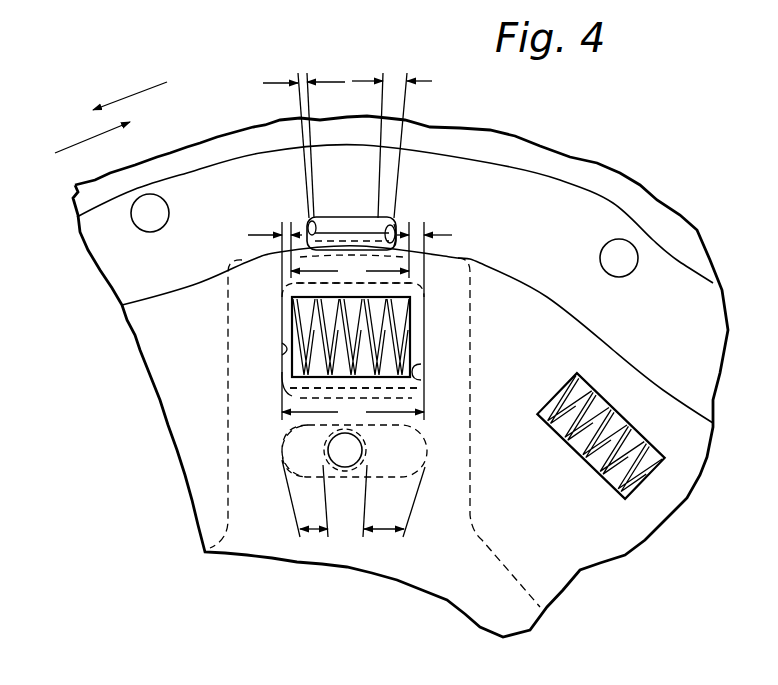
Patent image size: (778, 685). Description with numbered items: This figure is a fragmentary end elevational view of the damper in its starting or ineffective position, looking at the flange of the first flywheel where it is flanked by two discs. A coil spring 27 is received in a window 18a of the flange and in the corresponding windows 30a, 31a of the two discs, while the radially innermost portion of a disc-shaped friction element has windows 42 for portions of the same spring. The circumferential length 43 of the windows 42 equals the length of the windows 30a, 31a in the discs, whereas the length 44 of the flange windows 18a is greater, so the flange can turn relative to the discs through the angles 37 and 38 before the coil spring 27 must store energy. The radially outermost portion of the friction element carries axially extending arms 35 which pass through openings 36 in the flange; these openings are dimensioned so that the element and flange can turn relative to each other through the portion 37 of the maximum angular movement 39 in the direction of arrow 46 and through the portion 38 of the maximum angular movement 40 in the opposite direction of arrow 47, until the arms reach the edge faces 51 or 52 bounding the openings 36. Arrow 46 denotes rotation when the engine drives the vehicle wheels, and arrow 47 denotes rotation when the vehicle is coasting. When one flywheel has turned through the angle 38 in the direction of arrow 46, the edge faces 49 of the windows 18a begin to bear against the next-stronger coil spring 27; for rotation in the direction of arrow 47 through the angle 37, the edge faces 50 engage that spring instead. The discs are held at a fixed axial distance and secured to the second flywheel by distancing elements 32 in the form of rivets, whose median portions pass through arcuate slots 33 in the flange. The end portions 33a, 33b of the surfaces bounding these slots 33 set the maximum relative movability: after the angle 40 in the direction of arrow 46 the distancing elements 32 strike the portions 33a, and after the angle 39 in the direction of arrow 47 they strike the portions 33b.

The arrow 46 is at (143, 85).
The arrow 47 is at (78, 142).
The angle 37 is at (280, 225).
The angle 38 is at (427, 226).
The axially extending arms 35 is at (331, 232).
The edge face 52 is at (310, 217).
The openings 36 is at (388, 220).
The edge face 51 is at (395, 238).
The length 43 is at (350, 271).
The length 44 is at (353, 412).
The windows 42 is at (358, 307).
The windows 30a is at (412, 303).
The windows 31a is at (428, 345).
The coil springs 27 is at (378, 343).
The windows 18a is at (293, 306).
The edge faces 50 is at (282, 350).
The edge faces 49 is at (421, 373).
The arcuate slots 33 is at (408, 428).
The end portion of slot surface 33a is at (427, 450).
The end portion of slot surface 33b is at (282, 448).
The distancing elements 32 is at (350, 451).
The maximum angular movement 39 is at (305, 498).
The maximum angular movement 40 is at (394, 501).